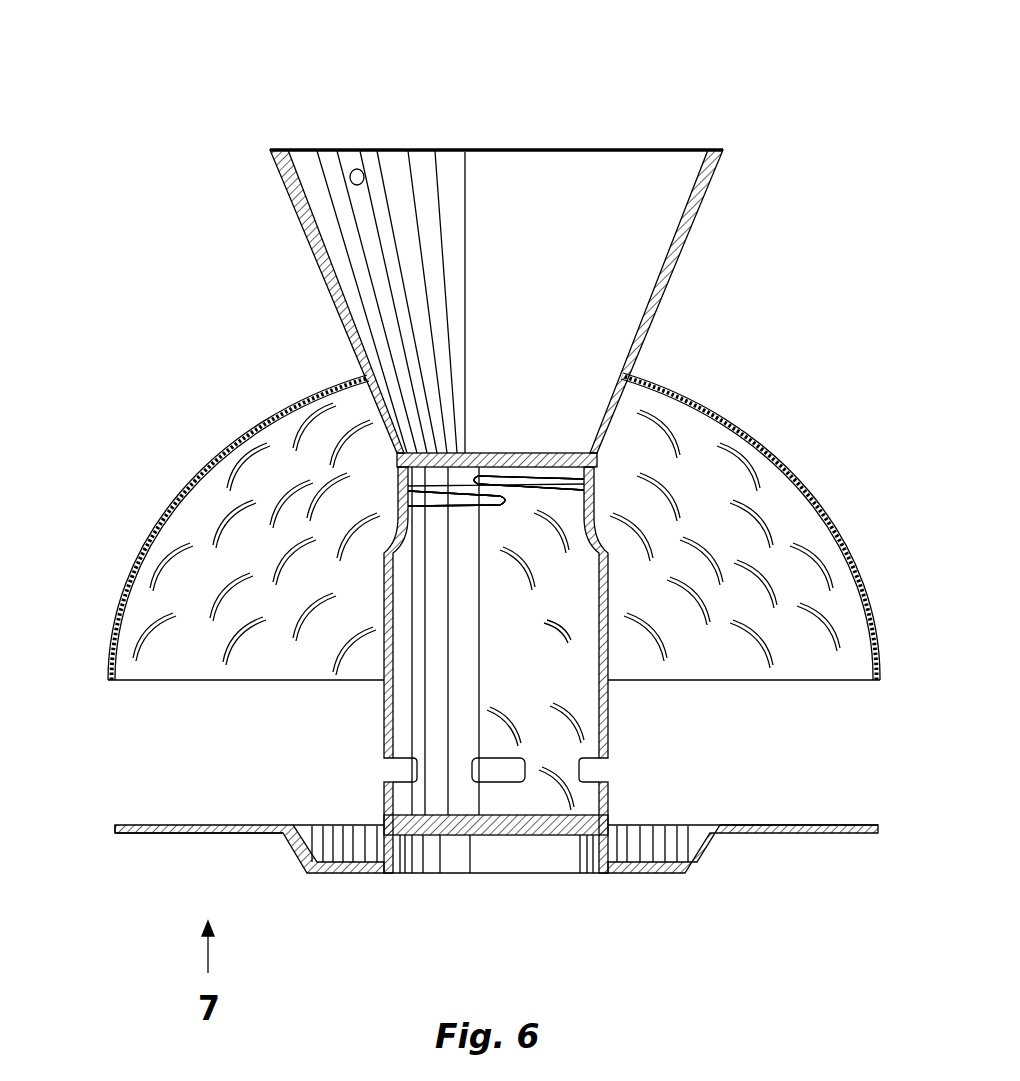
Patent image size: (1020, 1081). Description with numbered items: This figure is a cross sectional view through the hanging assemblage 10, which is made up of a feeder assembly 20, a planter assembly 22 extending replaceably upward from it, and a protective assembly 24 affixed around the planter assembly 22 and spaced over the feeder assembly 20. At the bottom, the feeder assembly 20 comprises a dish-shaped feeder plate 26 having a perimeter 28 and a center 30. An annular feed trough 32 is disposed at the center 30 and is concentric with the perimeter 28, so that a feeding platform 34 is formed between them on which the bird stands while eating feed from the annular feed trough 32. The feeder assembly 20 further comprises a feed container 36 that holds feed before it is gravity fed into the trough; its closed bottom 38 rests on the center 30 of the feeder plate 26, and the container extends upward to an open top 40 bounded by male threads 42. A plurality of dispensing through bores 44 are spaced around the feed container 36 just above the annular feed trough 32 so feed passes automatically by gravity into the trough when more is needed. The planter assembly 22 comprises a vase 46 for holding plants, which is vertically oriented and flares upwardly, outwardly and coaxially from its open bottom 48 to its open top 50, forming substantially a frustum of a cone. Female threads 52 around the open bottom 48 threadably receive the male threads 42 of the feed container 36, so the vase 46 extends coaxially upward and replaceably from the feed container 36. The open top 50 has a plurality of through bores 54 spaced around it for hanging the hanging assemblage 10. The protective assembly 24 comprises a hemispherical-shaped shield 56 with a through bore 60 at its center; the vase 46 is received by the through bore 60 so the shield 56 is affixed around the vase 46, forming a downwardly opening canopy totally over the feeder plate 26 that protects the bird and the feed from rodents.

The hanging assemblage 10 is at (102, 249).
The feeder assembly 20 is at (230, 813).
The planter assembly 22 is at (270, 176).
The protective assembly 24 is at (238, 418).
The feeder plate 26 is at (165, 847).
The perimeter 28 is at (115, 828).
The center 30 is at (511, 874).
The annular feed trough 32 is at (355, 838).
The feeding platform 34 is at (827, 824).
The feed container 36 is at (622, 712).
The closed bottom 38 is at (480, 837).
The open top 40 is at (525, 477).
The male threads 42 is at (525, 477).
The dispensing through bores 44 is at (503, 757).
The vase 46 is at (309, 263).
The open bottom 48 is at (525, 477).
The open top 50 is at (512, 148).
The female threads 52 is at (525, 477).
The through bores 54 is at (357, 168).
The shield 56 is at (168, 489).
The through bore 60 is at (378, 362).